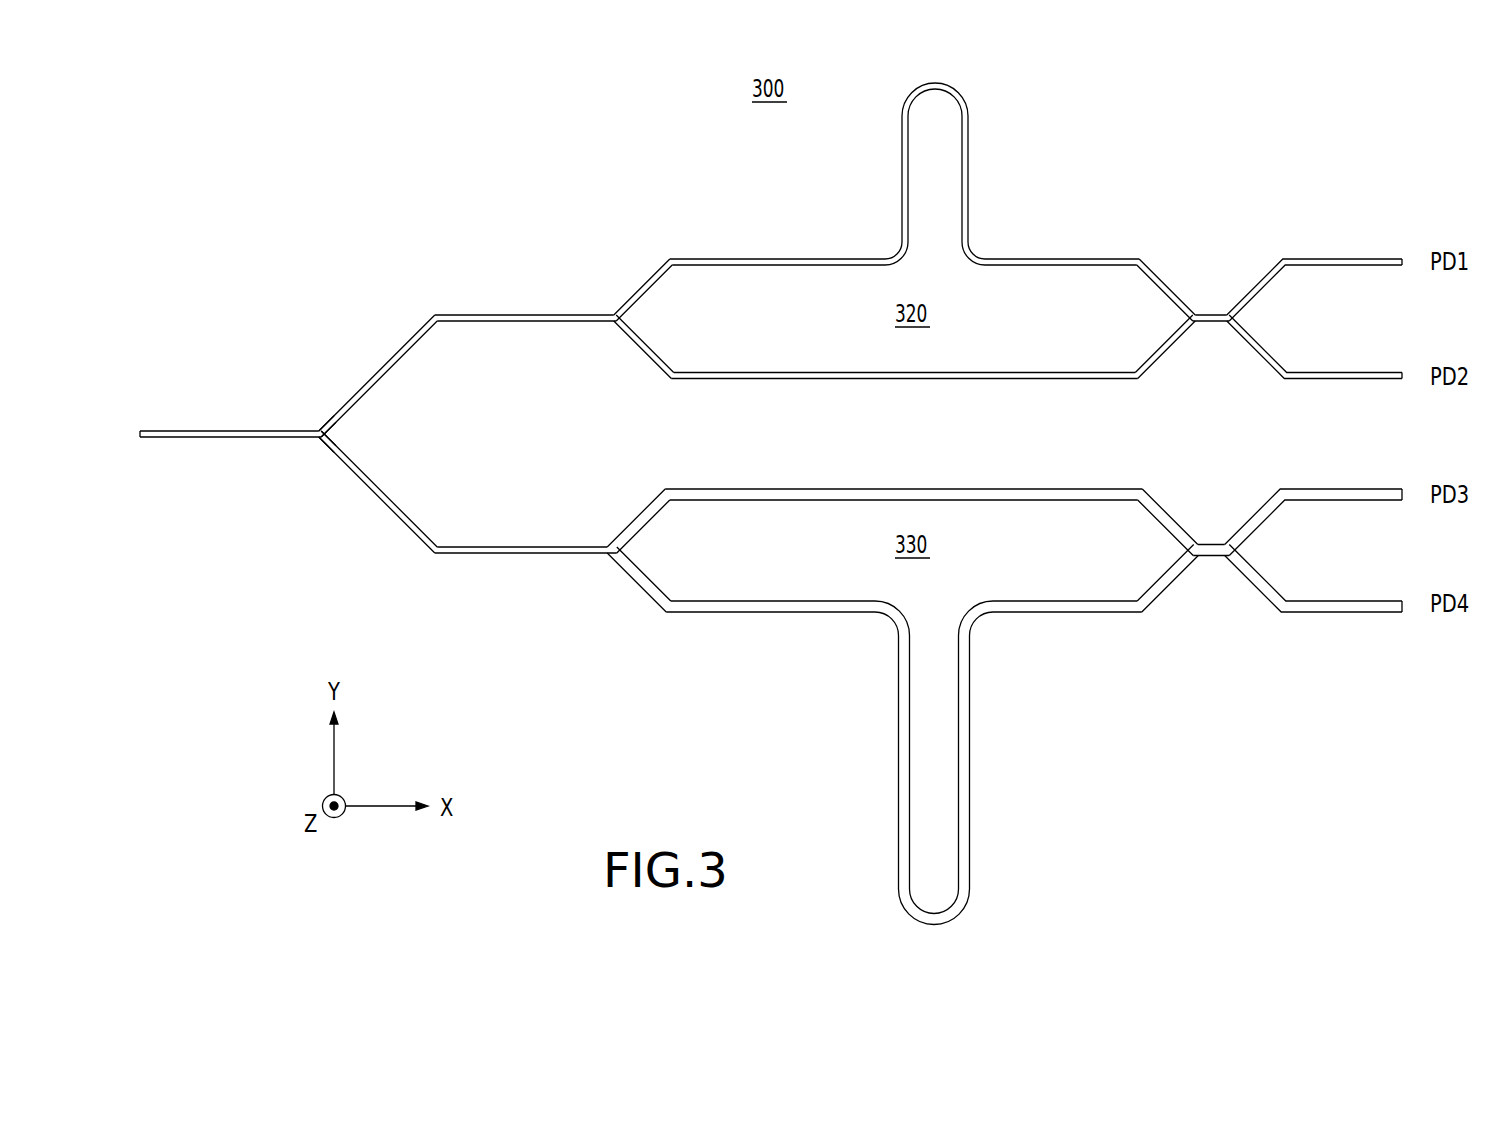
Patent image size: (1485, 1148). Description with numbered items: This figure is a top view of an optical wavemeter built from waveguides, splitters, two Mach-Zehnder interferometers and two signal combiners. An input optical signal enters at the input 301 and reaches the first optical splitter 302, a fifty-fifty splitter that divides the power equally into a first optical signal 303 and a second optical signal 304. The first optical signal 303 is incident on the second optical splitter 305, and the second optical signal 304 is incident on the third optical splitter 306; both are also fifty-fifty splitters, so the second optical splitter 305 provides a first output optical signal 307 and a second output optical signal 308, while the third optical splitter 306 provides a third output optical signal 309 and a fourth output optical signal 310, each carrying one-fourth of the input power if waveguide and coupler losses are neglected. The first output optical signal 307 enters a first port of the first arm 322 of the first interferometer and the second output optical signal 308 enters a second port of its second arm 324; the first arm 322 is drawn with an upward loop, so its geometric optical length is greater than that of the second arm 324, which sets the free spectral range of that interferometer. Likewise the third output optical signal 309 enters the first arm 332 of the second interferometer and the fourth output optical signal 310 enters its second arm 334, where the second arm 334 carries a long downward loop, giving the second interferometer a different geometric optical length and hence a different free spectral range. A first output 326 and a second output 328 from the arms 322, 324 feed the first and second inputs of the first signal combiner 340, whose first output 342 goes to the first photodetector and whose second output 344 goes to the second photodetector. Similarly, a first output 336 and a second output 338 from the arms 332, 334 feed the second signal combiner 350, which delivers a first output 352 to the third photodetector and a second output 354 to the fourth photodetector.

The input 301 is at (142, 431).
The first optical splitter 302 is at (318, 428).
The first optical signal 303 is at (393, 335).
The second optical signal 304 is at (392, 537).
The second optical splitter 305 is at (613, 317).
The third optical splitter 306 is at (612, 558).
The first output optical signal 307 is at (657, 247).
The second output optical signal 308 is at (657, 392).
The third output optical signal 309 is at (657, 475).
The fourth output optical signal 310 is at (657, 627).
The first arm of the first MZI 322 is at (728, 258).
The second arm of the first MZI 324 is at (862, 380).
The first output of the first MZI 326 is at (1157, 268).
The second output of the first MZI 328 is at (1165, 348).
The first arm of the second MZI 332 is at (750, 488).
The second arm of the second MZI 334 is at (970, 736).
The first output of the second MZI 336 is at (1170, 514).
The second output of the second MZI 338 is at (1167, 594).
The first signal combiner 340 is at (1215, 296).
The first output of the first signal combiner 342 is at (1260, 280).
The second output of the first signal combiner 344 is at (1262, 345).
The second signal combiner 350 is at (1212, 570).
The first output of the second signal combiner 352 is at (1265, 522).
The second output of the second signal combiner 354 is at (1268, 577).